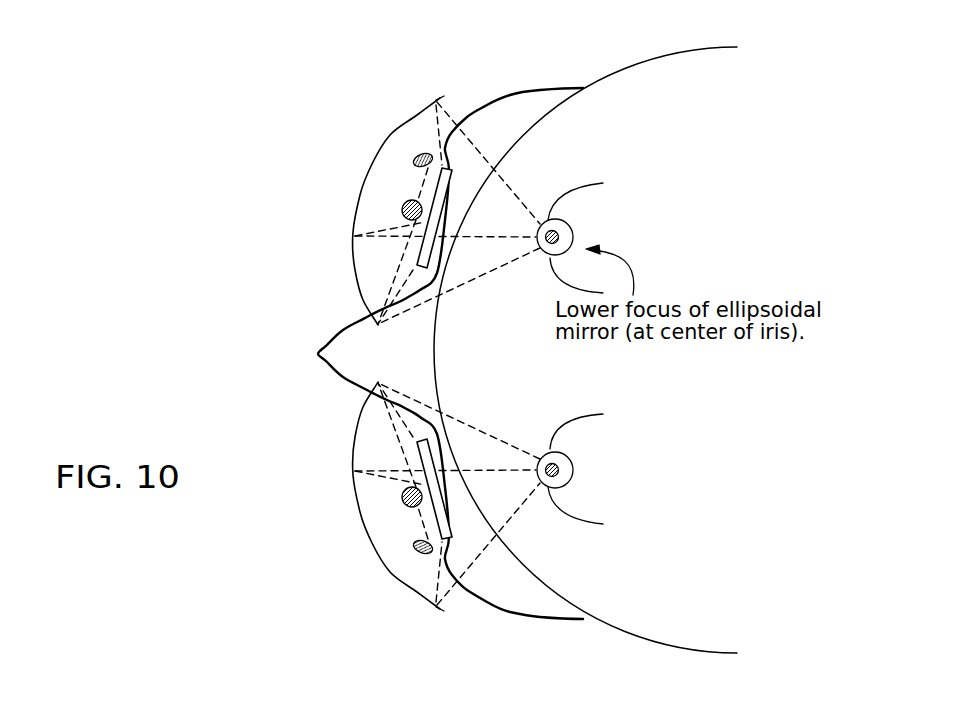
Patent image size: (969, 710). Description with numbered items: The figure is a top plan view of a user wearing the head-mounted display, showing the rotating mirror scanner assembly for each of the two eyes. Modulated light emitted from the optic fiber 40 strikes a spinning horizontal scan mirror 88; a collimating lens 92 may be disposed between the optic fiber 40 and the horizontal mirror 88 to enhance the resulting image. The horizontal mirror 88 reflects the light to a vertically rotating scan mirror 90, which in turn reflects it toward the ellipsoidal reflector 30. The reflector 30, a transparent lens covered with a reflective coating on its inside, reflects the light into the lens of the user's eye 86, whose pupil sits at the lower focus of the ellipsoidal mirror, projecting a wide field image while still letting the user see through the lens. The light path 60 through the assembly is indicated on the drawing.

The ellipsoidal reflector 30 is at (355, 290).
The optic fiber 40 is at (527, 90).
The light path 60 is at (512, 187).
The user's eye 86 is at (560, 232).
The horizontal scan mirror 88 is at (400, 212).
The vertical scan mirror 90 is at (452, 165).
The collimating lens 92 is at (415, 156).